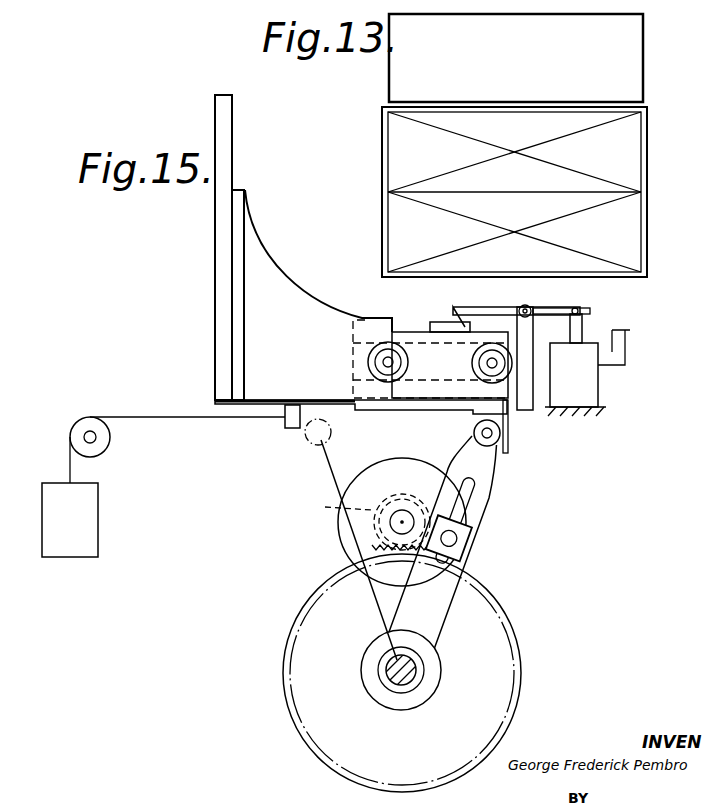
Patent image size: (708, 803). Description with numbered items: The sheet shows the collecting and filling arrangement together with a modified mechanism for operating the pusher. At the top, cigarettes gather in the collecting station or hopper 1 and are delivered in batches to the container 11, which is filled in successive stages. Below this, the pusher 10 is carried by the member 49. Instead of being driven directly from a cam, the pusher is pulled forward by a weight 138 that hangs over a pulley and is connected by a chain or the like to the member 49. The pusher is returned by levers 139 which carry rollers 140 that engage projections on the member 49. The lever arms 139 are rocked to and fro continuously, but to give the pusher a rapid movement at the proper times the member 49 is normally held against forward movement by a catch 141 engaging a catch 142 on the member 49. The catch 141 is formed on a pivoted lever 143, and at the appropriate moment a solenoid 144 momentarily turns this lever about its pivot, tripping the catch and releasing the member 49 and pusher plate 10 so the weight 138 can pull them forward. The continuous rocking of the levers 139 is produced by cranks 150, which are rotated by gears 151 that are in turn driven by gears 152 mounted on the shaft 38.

In FIG. 13, the hopper 1 is at (408, 58).
In FIG. 13, the container 11 is at (643, 135).
In FIG. 15, the pusher 10 is at (222, 217).
In FIG. 15, the member 49 is at (265, 266).
In FIG. 15, the catch 141 is at (453, 309).
In FIG. 15, the catch 142 is at (462, 322).
In FIG. 15, the pivoted lever 143 is at (527, 306).
In FIG. 15, the solenoid 144 is at (577, 345).
In FIG. 15, the crank 150 is at (378, 470).
In FIG. 15, the gear 151 is at (326, 506).
In FIG. 15, the roller 140 is at (475, 429).
In FIG. 15, the lever 139 is at (484, 494).
In FIG. 15, the gear 152 is at (470, 558).
In FIG. 15, the shaft 38 is at (395, 669).
In FIG. 15, the weight 138 is at (88, 504).